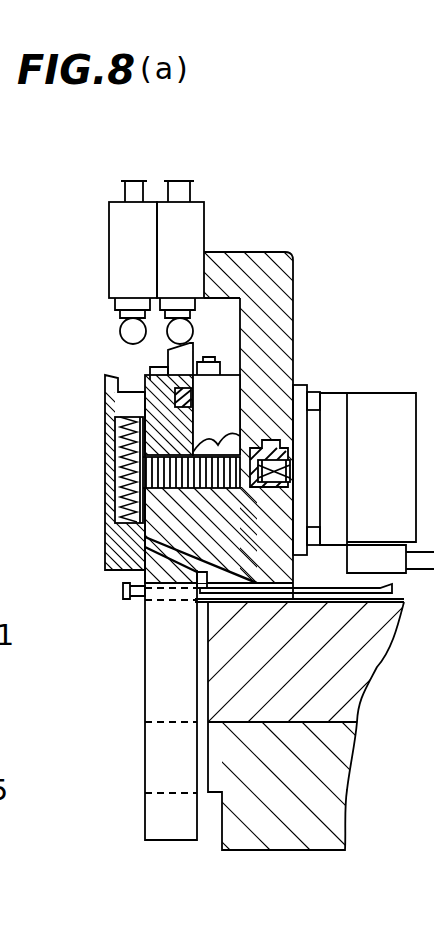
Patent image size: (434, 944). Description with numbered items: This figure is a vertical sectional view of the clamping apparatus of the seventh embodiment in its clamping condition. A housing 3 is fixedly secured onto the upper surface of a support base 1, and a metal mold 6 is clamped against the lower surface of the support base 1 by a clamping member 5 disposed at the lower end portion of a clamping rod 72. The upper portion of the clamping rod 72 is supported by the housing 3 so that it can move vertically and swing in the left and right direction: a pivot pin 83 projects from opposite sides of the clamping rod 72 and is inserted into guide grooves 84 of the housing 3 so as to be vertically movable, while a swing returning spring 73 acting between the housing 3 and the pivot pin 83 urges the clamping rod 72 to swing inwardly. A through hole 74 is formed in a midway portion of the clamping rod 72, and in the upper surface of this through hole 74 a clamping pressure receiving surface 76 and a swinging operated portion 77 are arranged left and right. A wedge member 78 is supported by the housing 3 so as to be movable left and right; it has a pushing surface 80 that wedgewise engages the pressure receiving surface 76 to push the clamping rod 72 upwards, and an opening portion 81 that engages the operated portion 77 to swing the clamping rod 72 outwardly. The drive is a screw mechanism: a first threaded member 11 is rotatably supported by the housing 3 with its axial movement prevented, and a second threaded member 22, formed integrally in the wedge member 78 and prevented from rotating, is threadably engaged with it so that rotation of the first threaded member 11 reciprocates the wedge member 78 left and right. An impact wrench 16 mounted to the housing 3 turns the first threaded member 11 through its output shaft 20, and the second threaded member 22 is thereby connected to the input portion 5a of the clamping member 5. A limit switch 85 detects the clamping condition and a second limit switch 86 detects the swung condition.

The support base 1 is at (372, 646).
The housing 3 is at (297, 276).
The clamping member 5 is at (252, 728).
The input portion 5a is at (152, 775).
The metal mold 6 is at (280, 833).
The first threaded member 11 is at (268, 449).
The impact wrench 16 is at (339, 392).
The output shaft 20 is at (286, 477).
The second threaded member 22 is at (136, 504).
The clamping rod 72 is at (146, 668).
The swing returning spring 73 is at (123, 586).
The through hole 74 is at (172, 552).
The clamping pressure receiving surface 76 is at (114, 437).
The swinging operated portion 77 is at (216, 415).
The wedge member 78 is at (130, 455).
The pushing surface 80 is at (106, 395).
The opening portion 81 is at (208, 443).
The pivot pin 83 is at (150, 378).
The guide grooves 84 is at (186, 362).
The limit switch 85 is at (200, 222).
The limit switch 86 is at (112, 222).